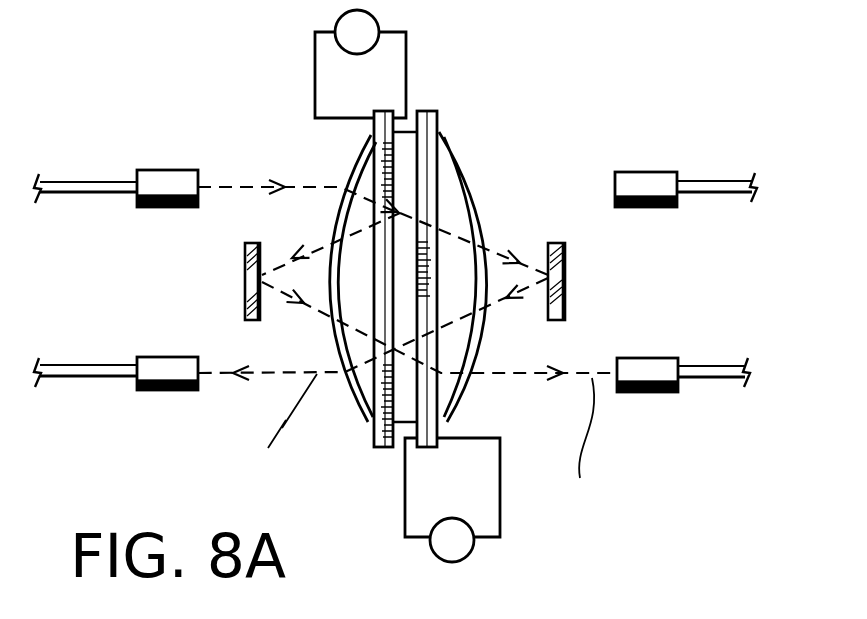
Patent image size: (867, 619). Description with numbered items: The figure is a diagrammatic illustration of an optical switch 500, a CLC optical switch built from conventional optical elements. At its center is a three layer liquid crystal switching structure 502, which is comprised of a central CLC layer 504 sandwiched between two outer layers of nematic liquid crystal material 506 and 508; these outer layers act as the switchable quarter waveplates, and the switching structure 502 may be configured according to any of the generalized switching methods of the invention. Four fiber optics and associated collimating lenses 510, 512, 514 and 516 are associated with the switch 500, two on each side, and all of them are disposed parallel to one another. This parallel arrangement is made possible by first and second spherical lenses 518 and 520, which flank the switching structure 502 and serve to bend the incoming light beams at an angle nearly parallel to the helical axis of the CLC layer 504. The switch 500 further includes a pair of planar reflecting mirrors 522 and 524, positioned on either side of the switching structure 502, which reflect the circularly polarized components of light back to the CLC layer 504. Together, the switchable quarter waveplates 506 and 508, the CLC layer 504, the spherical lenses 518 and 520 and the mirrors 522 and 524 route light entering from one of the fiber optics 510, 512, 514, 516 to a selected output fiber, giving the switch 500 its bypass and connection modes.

The optical switch 500 is at (653, 100).
The three layer liquid crystal switching structure 502 is at (424, 88).
The central CLC layer 504 is at (403, 142).
The outer layer of nematic liquid crystal material 506 is at (374, 131).
The outer layer of nematic liquid crystal material 508 is at (428, 135).
The fiber optic and associated collimating lens 510 is at (132, 160).
The fiber optic and associated collimating lens 512 is at (648, 168).
The fiber optic and associated collimating lens 514 is at (148, 402).
The fiber optic and associated collimating lens 516 is at (678, 405).
The first spherical lens 518 is at (352, 184).
The second spherical lens 520 is at (475, 195).
The planar reflecting mirror 522 is at (244, 261).
The planar reflecting mirror 524 is at (566, 275).